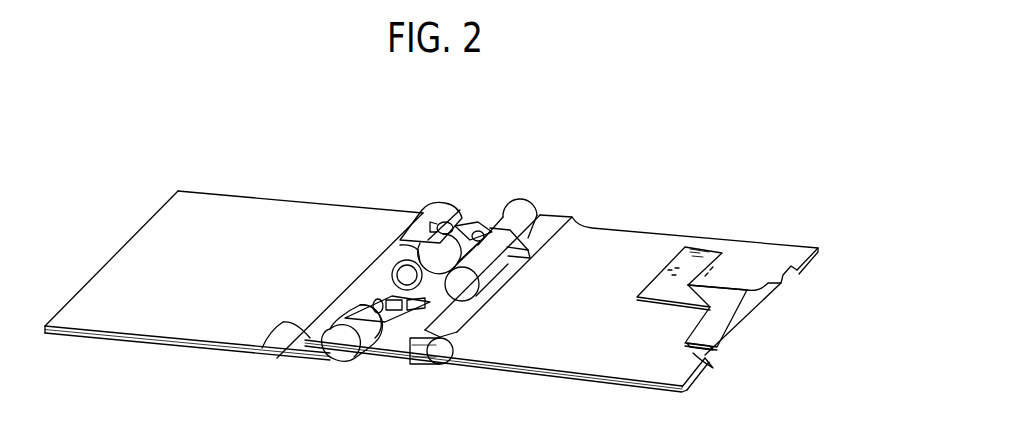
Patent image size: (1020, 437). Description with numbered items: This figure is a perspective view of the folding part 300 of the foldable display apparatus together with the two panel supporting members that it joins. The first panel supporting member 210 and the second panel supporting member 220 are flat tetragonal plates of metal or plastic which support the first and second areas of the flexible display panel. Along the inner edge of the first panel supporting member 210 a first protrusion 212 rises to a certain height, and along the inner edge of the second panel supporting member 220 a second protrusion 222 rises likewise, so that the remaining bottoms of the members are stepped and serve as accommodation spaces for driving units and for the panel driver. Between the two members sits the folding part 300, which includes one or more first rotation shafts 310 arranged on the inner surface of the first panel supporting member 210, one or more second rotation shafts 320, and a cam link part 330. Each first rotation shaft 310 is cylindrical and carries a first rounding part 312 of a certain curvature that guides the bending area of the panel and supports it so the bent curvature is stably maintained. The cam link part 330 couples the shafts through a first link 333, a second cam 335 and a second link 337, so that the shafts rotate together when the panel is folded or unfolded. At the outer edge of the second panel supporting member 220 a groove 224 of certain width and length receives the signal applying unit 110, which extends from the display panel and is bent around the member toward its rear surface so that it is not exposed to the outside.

The signal applying unit 110 is at (733, 325).
The first panel supporting member 210 is at (135, 343).
The first protrusion 212 is at (262, 348).
The second panel supporting member 220 is at (580, 380).
The second protrusion 222 is at (448, 357).
The groove 224 is at (700, 357).
The folding part 300 is at (422, 273).
The first rotation shaft 310 is at (410, 225).
The first rounding part 312 is at (335, 343).
The second rotation shaft 320 is at (530, 210).
The cam link part 330 is at (466, 187).
The first link 333 is at (440, 220).
The second cam 335 is at (510, 212).
The second link 337 is at (478, 220).